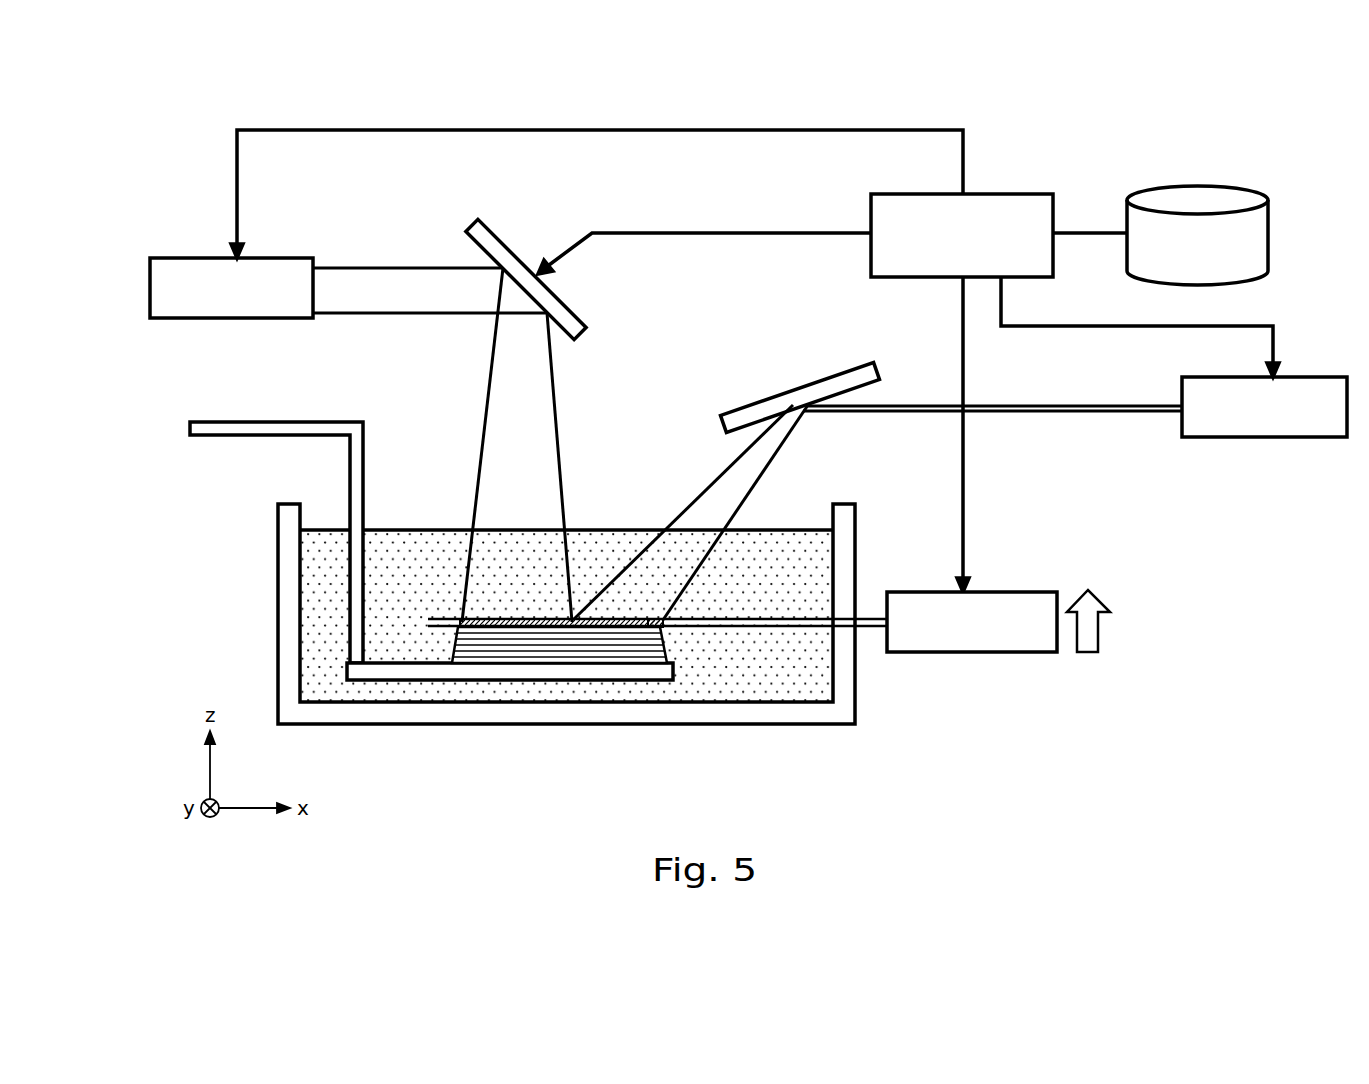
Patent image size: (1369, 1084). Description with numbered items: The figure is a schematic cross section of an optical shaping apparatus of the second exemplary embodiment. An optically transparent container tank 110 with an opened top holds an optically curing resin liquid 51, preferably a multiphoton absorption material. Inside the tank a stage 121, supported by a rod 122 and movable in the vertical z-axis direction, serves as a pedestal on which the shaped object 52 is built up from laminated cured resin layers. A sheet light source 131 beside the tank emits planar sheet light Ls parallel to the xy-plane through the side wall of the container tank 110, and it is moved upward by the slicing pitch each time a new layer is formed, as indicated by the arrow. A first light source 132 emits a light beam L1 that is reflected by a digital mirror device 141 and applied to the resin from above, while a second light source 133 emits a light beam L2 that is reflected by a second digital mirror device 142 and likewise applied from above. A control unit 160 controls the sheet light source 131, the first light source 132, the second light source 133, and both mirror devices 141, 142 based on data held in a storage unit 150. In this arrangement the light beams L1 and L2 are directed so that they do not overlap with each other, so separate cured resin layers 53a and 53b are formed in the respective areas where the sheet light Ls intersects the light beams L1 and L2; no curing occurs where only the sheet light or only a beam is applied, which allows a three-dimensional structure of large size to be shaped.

The container tank 110 is at (285, 592).
The stage 121 is at (580, 676).
The rod 122 is at (268, 420).
The sheet light source 131 is at (963, 652).
The first light source 132 is at (150, 292).
The second light source 133 is at (1270, 440).
The digital mirror device (DMD) 141 is at (587, 323).
The DMD (Digital Mirror Device) 142 is at (748, 410).
The storage unit 150 is at (1197, 195).
The control unit 160 is at (1043, 193).
The optically curing resin liquid 51 is at (433, 537).
The shaped object 52 is at (663, 648).
The cured resin layer 53a is at (520, 619).
The cured resin layer 53b is at (652, 619).
The light beam (first light beam) L1 is at (488, 430).
The light beam (second light beam) L2 is at (1130, 405).
The sheet light Ls is at (868, 623).